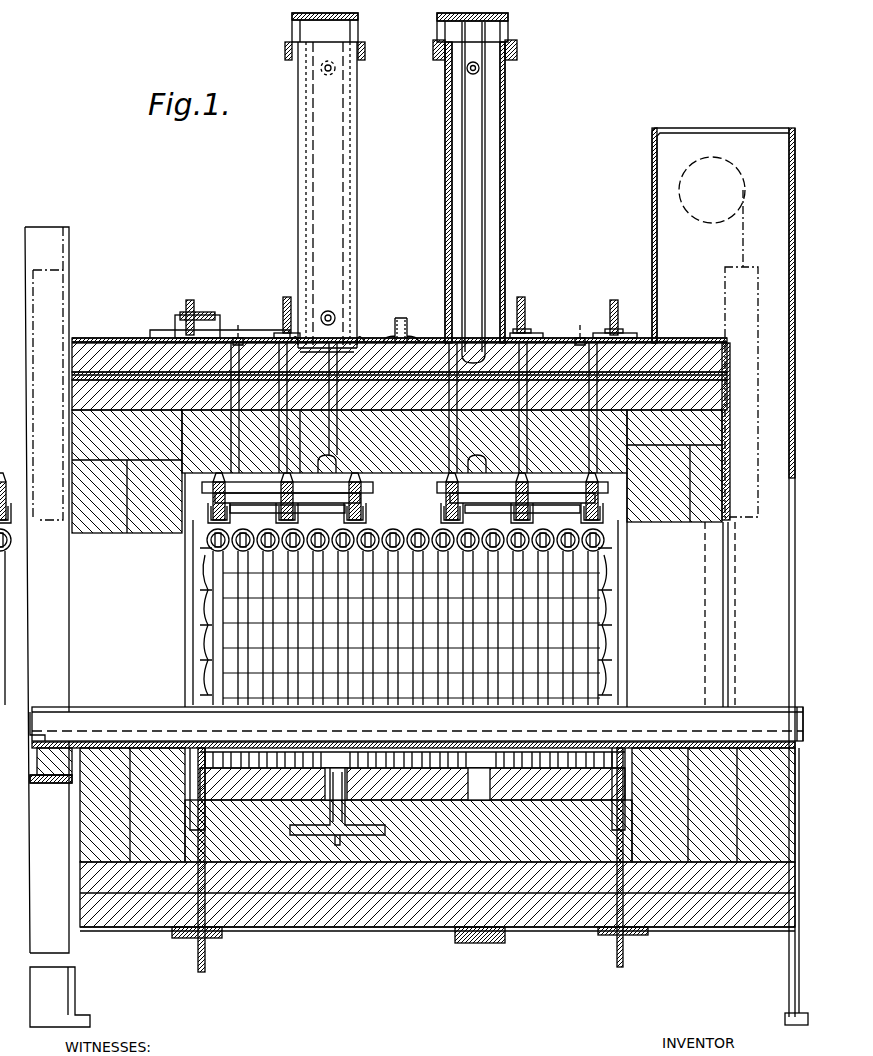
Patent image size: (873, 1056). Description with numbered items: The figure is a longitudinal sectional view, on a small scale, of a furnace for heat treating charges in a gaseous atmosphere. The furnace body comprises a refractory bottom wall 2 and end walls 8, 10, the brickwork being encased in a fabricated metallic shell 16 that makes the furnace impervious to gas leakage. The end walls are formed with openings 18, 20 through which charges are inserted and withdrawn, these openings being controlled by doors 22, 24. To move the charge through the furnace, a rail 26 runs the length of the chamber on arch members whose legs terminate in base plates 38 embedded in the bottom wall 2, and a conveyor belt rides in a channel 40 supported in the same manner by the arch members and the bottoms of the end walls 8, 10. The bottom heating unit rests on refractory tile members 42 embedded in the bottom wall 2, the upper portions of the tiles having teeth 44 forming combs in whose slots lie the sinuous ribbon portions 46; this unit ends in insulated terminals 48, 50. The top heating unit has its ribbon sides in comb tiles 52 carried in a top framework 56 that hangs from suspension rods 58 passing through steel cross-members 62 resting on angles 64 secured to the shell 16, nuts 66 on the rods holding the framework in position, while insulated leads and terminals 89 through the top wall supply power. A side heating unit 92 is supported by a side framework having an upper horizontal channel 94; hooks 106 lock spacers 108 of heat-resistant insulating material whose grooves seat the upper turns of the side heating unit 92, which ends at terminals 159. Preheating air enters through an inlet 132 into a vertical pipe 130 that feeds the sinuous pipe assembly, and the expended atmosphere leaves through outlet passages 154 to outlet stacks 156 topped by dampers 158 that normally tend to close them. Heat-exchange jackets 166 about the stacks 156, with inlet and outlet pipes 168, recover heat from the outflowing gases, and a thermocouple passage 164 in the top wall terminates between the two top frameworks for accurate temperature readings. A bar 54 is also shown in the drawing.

The bottom wall 2 is at (546, 890).
The end wall 8 is at (82, 490).
The end wall 10 is at (698, 520).
The metallic shell 16 is at (98, 342).
The opening 18 is at (697, 593).
The opening 20 is at (95, 568).
The door 22 is at (745, 327).
The door 24 is at (60, 282).
The rail 26 is at (752, 718).
The base plate 38 is at (375, 835).
The channel 40 is at (665, 720).
The refractory tile member 42 is at (270, 790).
The teeth 44 is at (348, 752).
The ribbon portions 46 is at (440, 752).
The terminal 48 is at (196, 955).
The terminal 50 is at (625, 965).
The comb tile 52 is at (282, 497).
The cross bar 54 is at (365, 512).
The top framework 56 is at (440, 510).
The suspension rod 58 is at (239, 342).
The cross-member 62 is at (146, 340).
The angle 64 is at (88, 342).
The nut 66 is at (240, 512).
The insulated leads and terminals 89 is at (287, 296).
The side heating unit 92 is at (612, 615).
The upper horizontal channel 94 is at (197, 533).
The hook 106 is at (418, 550).
The spacer 108 is at (210, 552).
The vertical pipe 130 is at (488, 600).
The inlet 132 is at (205, 320).
The outlet passage 154 is at (330, 343).
The outlet stack 156 is at (330, 190).
The damper 158 is at (292, 30).
The terminal 159 is at (192, 298).
The thermocouple passage 164 is at (410, 340).
The heat-exchange jacket 166 is at (490, 115).
The inlet and outlet pipes 168 is at (336, 70).